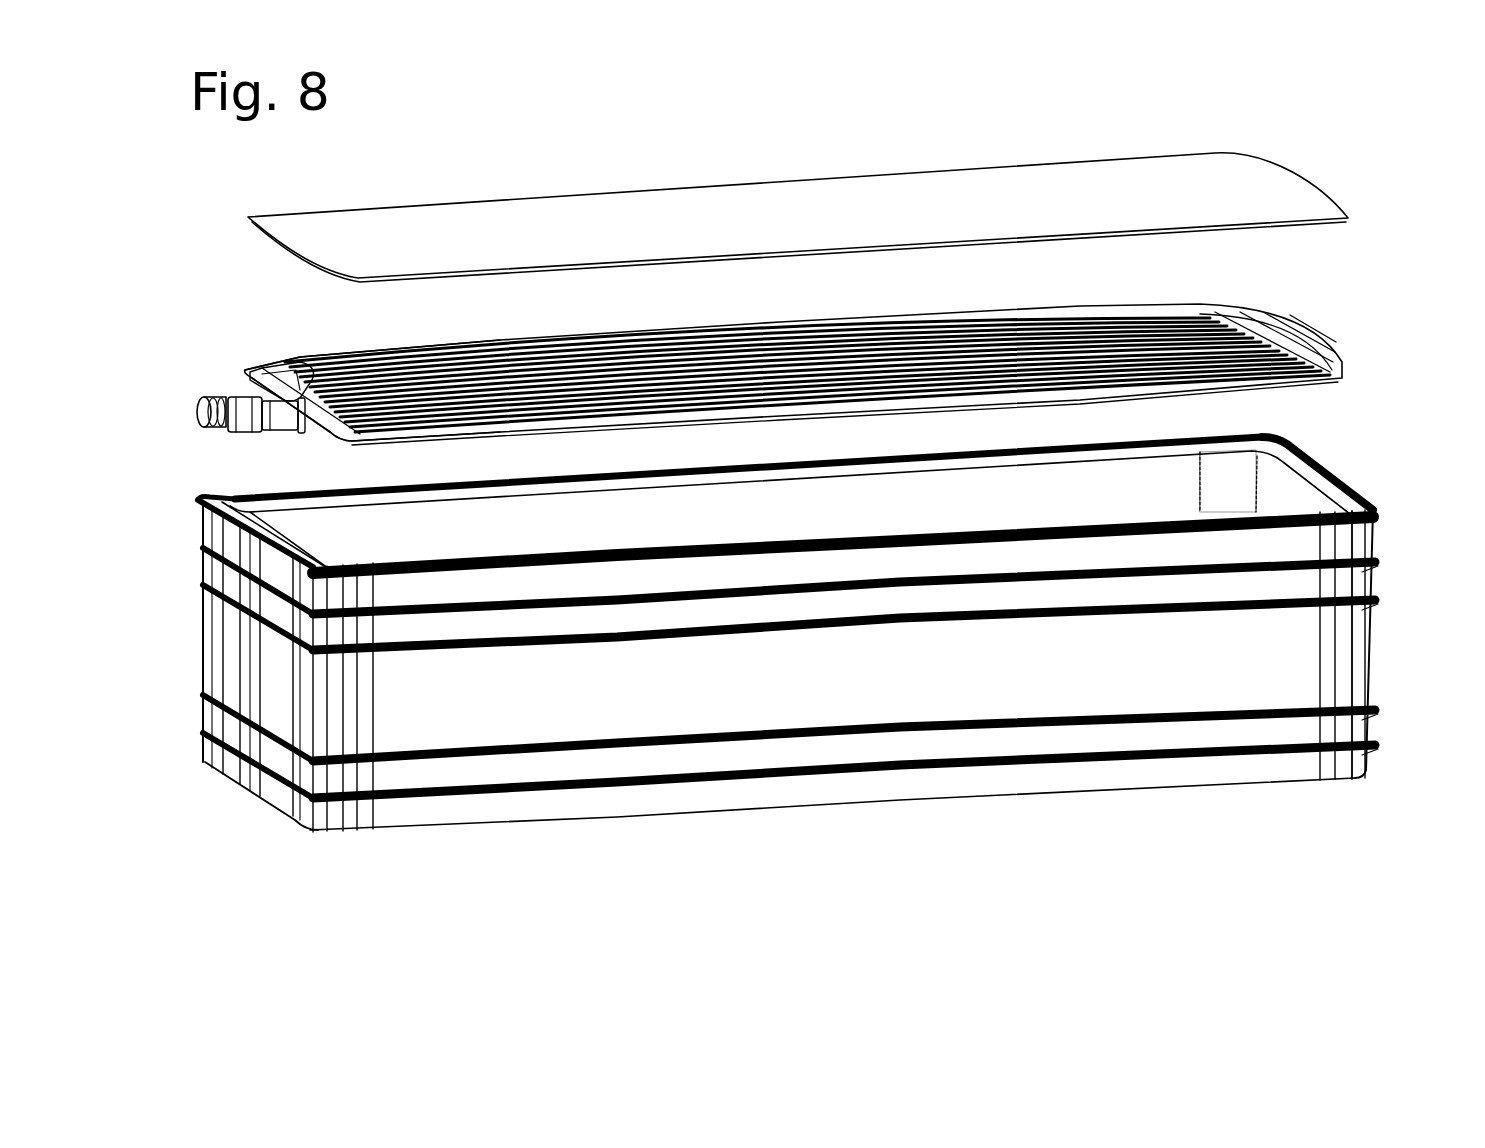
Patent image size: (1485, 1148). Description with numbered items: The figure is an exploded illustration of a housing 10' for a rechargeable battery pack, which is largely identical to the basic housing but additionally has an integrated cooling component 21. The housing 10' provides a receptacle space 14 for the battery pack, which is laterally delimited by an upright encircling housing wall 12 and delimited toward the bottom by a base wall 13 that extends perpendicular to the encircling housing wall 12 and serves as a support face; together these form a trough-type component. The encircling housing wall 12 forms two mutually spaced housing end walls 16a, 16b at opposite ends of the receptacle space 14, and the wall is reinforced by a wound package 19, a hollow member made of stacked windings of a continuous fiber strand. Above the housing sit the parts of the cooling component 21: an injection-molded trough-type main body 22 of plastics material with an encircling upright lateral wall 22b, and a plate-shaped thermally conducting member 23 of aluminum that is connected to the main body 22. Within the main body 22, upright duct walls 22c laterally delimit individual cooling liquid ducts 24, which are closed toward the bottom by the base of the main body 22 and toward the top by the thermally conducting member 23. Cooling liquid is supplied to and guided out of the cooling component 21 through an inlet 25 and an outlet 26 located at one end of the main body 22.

The housing 10' is at (790, 505).
The encircling housing wall 12 is at (1295, 656).
The base wall 13 is at (706, 796).
The receptacle space 14 is at (1276, 492).
The housing end wall 16a is at (225, 650).
The housing end wall 16b is at (1355, 503).
The wound package 19 is at (1266, 442).
The cooling component 21 is at (1418, 163).
The main body 22 is at (1305, 345).
The lateral wall 22b is at (840, 405).
The duct walls 22c is at (345, 378).
The thermally conducting member 23 is at (741, 202).
The cooling liquid ducts 24 is at (312, 353).
The inlet 25 is at (240, 426).
The outlet 26 is at (213, 403).